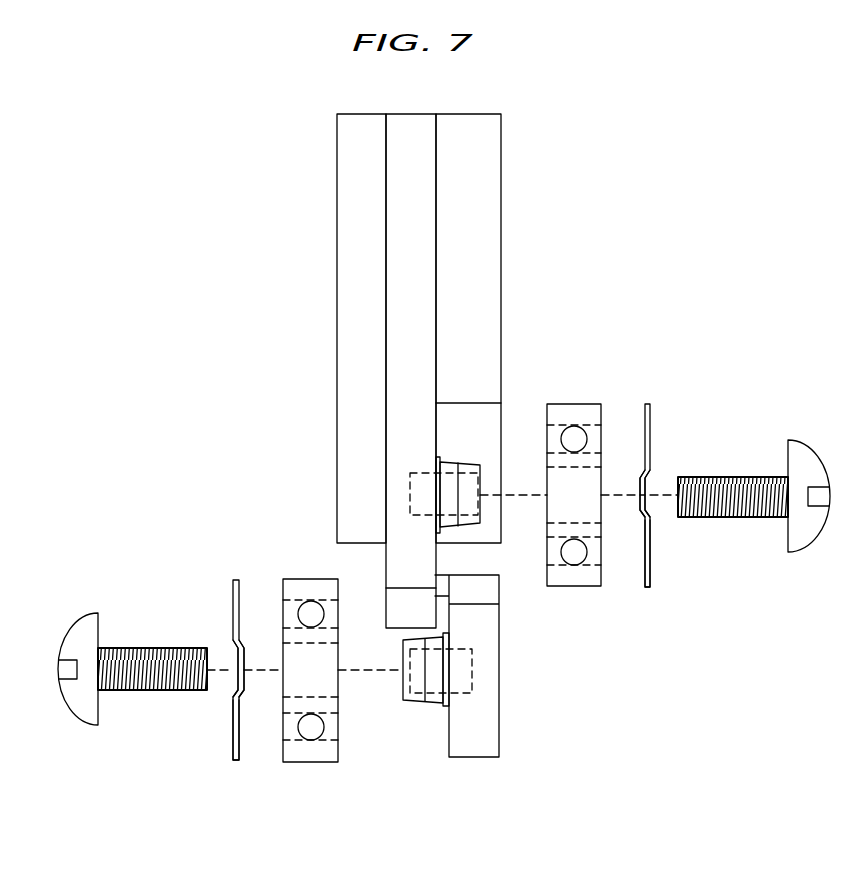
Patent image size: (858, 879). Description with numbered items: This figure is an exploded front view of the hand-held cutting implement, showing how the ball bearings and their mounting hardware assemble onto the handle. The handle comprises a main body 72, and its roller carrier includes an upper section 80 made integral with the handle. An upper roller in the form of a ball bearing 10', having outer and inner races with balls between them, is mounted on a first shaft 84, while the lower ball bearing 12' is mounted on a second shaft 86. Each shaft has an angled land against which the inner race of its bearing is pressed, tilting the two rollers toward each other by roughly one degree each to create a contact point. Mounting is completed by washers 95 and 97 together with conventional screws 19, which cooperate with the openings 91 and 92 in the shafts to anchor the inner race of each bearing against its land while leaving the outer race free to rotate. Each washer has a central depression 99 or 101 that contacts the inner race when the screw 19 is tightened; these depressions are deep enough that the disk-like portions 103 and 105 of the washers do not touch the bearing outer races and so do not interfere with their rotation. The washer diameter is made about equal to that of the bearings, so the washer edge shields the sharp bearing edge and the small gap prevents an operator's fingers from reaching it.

The main body 72 is at (512, 225).
The upper section 80 is at (467, 764).
The first shaft 84 is at (452, 462).
The second shaft 86 is at (413, 703).
The opening 91 is at (466, 476).
The opening 92 is at (397, 608).
The ball bearing 10' is at (298, 633).
The lower ball bearing 12' is at (588, 527).
The screws 19 is at (128, 690).
The washer 95 is at (208, 687).
The central depression 99 is at (233, 683).
The disk-like portion 103 is at (233, 760).
The washer 97 is at (692, 484).
The central depression 101 is at (646, 480).
The disk-like portion 105 is at (652, 550).